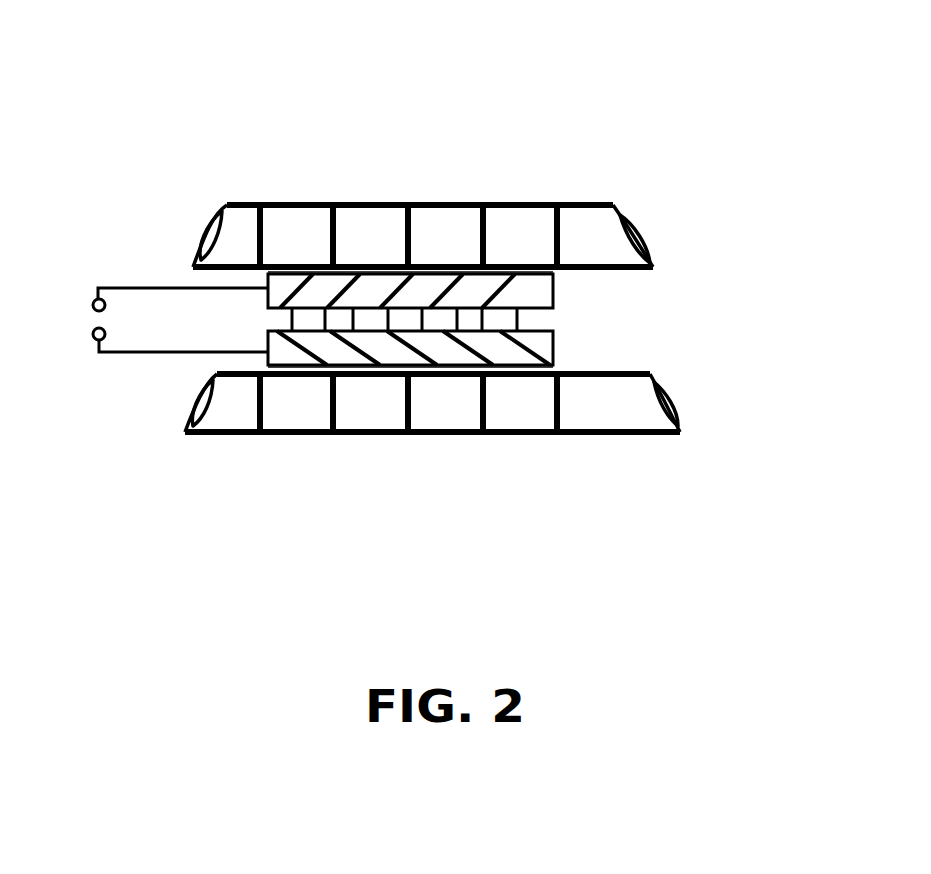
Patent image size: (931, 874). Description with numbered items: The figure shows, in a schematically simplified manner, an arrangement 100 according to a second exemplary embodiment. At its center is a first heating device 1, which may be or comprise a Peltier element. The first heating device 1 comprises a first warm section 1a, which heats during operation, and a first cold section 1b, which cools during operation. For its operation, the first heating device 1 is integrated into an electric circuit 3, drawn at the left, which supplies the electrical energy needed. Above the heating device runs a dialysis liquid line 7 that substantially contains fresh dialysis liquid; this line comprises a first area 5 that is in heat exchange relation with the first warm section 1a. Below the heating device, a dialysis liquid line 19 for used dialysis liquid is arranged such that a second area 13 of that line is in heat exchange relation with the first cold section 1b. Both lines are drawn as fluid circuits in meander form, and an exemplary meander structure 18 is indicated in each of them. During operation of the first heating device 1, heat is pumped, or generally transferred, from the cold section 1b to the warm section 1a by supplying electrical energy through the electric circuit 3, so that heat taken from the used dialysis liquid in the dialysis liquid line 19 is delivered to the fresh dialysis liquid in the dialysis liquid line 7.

The arrangement 100 is at (438, 174).
The first heating device 1 is at (650, 328).
The first warm section 1a is at (553, 300).
The first cold section 1b is at (553, 352).
The electric circuit 3 is at (140, 288).
The first area 5 is at (408, 262).
The dialysis liquid line 7 is at (598, 222).
The second area 13 is at (418, 377).
The meander structure 18 is at (523, 225).
The dialysis liquid line 19 is at (628, 415).